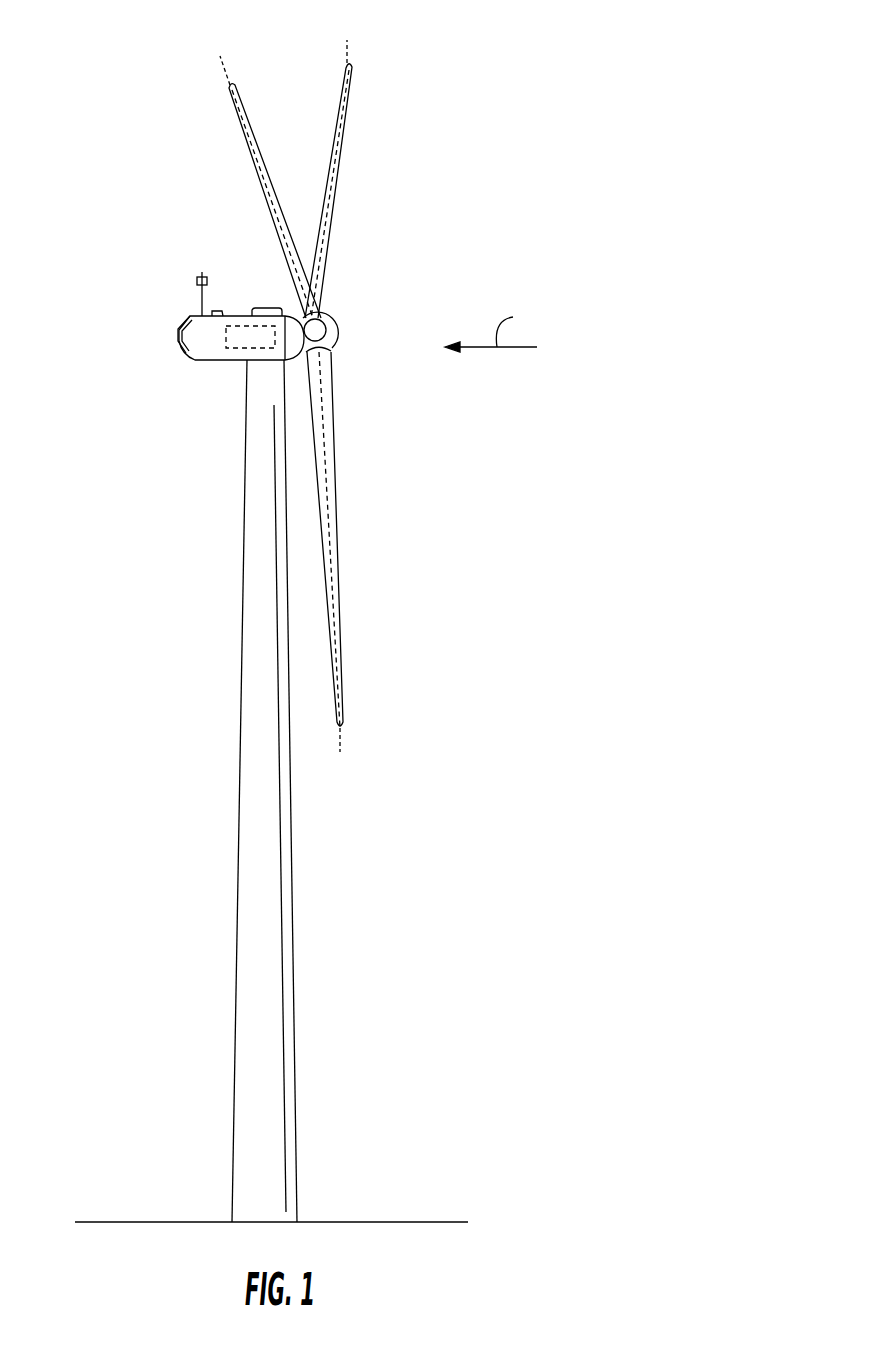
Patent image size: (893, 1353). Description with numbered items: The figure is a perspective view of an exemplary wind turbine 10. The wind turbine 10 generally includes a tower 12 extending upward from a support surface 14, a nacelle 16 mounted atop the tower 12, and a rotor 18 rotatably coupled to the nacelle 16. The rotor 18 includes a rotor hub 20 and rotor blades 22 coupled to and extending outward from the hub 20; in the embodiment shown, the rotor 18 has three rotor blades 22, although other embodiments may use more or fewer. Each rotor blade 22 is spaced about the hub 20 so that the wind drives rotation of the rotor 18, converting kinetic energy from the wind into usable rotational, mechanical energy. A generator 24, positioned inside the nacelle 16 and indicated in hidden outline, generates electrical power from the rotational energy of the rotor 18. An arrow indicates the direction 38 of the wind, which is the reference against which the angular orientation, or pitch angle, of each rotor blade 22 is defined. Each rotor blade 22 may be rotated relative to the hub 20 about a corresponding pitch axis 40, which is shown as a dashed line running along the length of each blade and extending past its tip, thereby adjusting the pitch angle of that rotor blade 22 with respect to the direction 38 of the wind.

The wind turbine 10 is at (472, 182).
The tower 12 is at (288, 918).
The support surface 14 is at (156, 1222).
The nacelle 16 is at (220, 347).
The rotor 18 is at (353, 304).
The rotor hub 20 is at (343, 338).
The rotor blade 22 is at (332, 173).
The generator 24 is at (240, 312).
The direction of the wind 38 is at (491, 325).
The pitch axis 40 is at (225, 72).